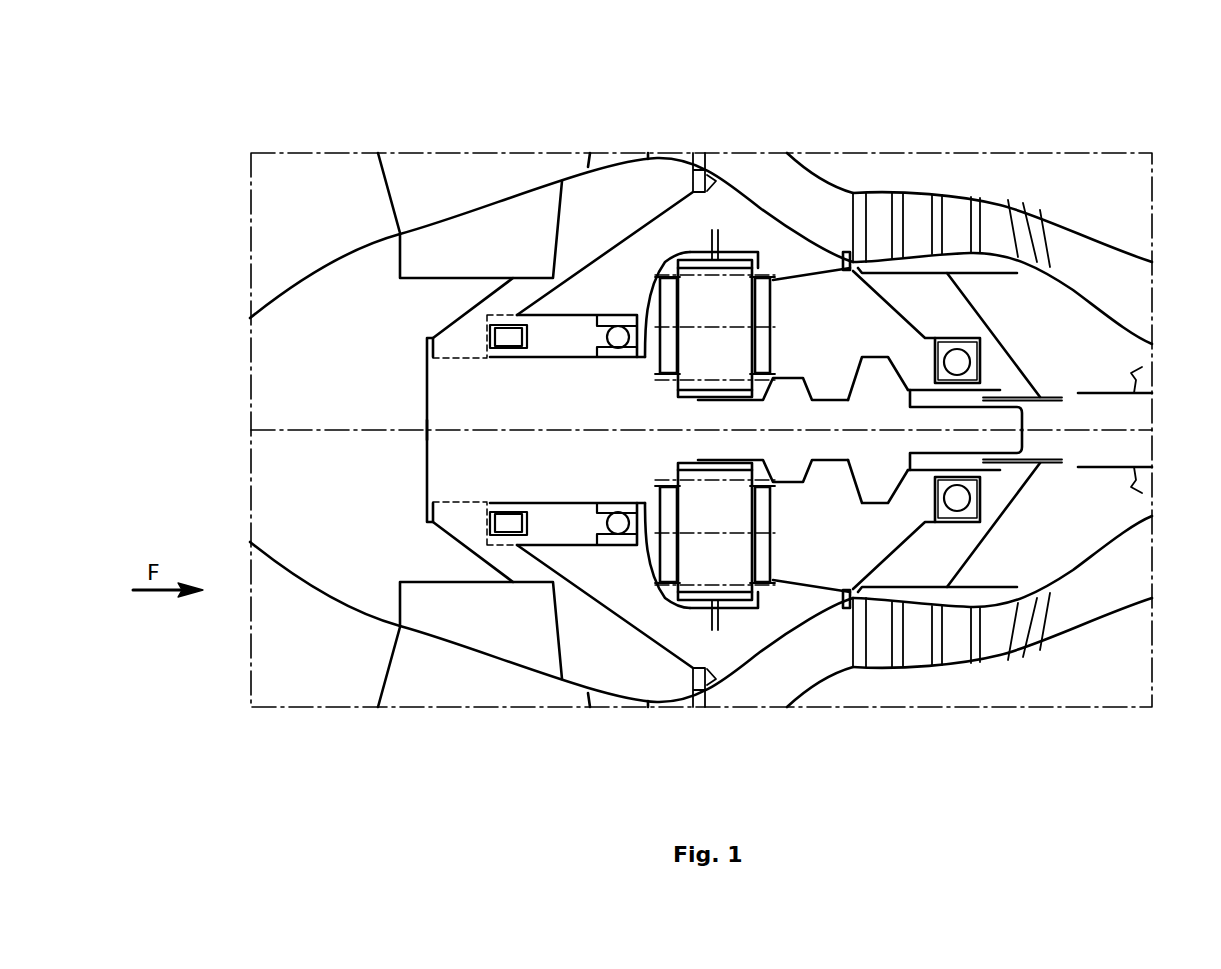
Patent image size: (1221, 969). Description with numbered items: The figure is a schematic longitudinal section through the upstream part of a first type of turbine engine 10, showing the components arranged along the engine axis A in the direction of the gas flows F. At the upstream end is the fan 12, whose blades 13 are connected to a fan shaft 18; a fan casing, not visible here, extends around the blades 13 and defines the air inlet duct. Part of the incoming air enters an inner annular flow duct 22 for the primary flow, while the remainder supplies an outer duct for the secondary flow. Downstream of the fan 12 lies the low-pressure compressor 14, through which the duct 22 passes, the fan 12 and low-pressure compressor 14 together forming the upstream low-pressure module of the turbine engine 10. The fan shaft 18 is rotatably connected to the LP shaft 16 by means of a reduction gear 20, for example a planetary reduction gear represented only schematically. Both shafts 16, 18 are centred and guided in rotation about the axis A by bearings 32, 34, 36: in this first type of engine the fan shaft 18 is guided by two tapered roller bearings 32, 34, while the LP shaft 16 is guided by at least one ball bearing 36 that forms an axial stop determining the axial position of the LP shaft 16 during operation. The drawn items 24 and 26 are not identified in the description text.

The turbine engine 10 is at (302, 112).
The fan 12 is at (412, 163).
The blades 13 is at (460, 170).
The low-pressure compressor 14 is at (952, 213).
The LP shaft 16 is at (1117, 403).
The fan shaft 18 is at (552, 357).
The reduction gear 20 is at (733, 292).
The inner annular flow duct 22 is at (807, 190).
The shaft 24 is at (733, 400).
The shaft shoulder 26 is at (902, 382).
The tapered roller bearing 32 is at (510, 335).
The tapered roller bearing 34 is at (613, 327).
The ball bearing 36 is at (958, 362).
The axis A is at (290, 432).